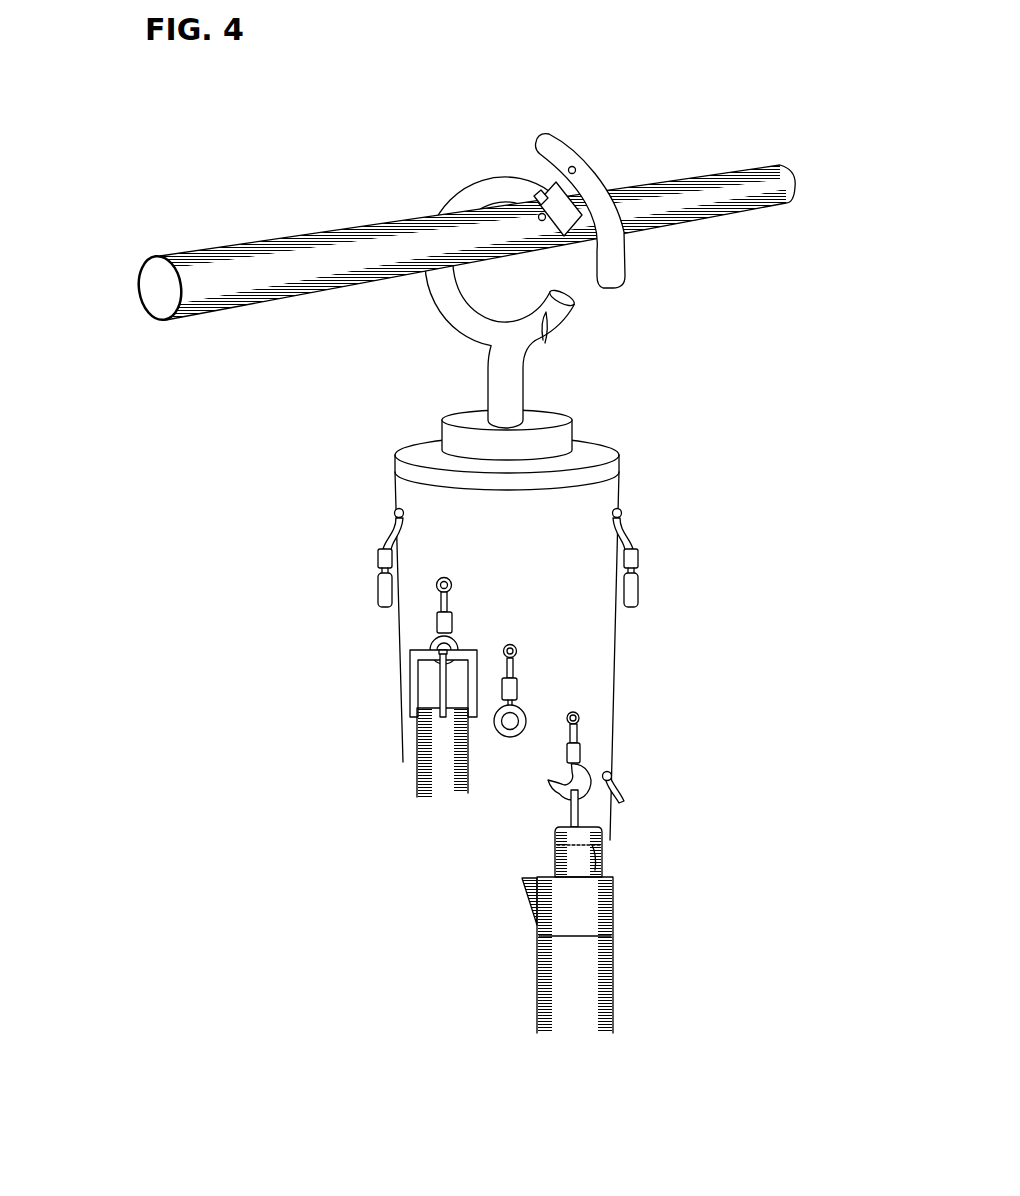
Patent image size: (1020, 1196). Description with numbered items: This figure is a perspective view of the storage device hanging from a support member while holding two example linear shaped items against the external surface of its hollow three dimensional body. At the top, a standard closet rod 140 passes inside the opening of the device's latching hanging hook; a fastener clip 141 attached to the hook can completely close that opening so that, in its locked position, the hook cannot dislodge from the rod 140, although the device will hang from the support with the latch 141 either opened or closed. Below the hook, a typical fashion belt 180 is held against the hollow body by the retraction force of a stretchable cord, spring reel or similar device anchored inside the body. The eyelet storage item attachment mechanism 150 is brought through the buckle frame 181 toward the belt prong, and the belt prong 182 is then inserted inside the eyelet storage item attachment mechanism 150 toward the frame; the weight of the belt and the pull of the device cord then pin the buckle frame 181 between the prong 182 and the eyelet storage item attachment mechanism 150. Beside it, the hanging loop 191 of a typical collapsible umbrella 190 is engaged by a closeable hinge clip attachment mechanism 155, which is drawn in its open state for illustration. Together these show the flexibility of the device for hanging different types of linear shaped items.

The closet rod 140 is at (245, 237).
The fastener clip 141 is at (607, 173).
The eyelet storage item attachment mechanism 150 is at (432, 640).
The closeable hinge clip attachment mechanism 155 is at (588, 765).
The fashion belt 180 is at (435, 770).
The buckle frame 181 is at (410, 665).
The belt prong 182 is at (440, 688).
The collapsible umbrella 190 is at (613, 976).
The hanging loop 191 is at (587, 811).